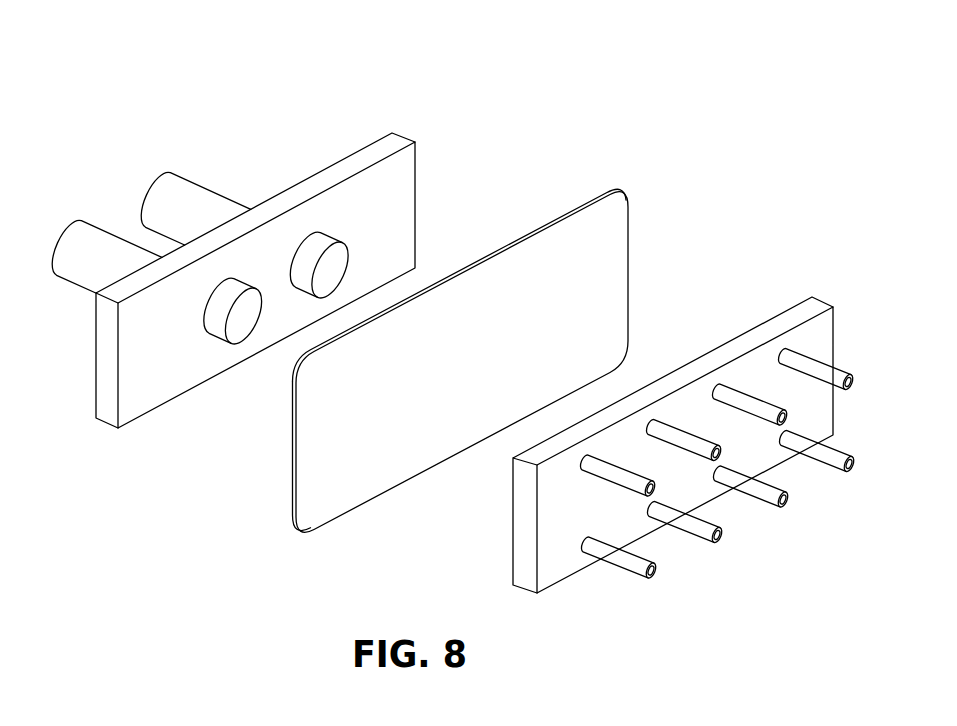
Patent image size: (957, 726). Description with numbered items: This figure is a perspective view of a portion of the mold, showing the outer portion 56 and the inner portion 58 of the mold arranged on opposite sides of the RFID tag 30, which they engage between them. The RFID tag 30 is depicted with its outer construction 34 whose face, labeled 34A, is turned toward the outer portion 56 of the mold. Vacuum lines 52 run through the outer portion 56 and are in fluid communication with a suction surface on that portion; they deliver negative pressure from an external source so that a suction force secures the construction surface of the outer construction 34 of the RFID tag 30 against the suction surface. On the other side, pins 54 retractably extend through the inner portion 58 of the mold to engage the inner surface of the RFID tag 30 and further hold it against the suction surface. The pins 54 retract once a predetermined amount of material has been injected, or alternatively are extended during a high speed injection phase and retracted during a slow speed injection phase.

The RFID tag 30 is at (653, 88).
The outer construction 34 is at (620, 192).
The gasket front face 34A is at (617, 228).
The vacuum lines 52 is at (722, 540).
The pins 54 is at (55, 246).
The outer portion 56 is at (816, 298).
The inner portion 58 is at (403, 133).